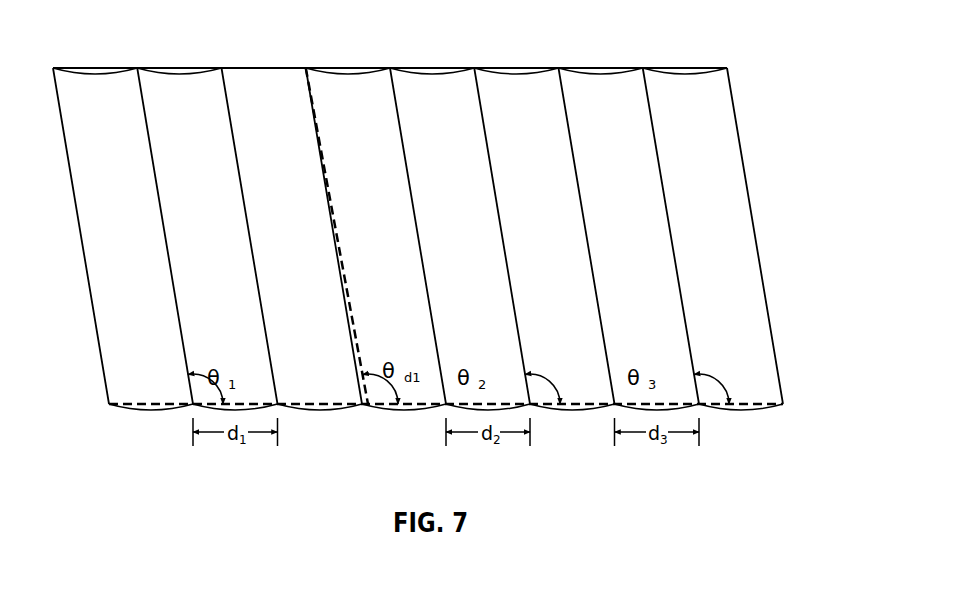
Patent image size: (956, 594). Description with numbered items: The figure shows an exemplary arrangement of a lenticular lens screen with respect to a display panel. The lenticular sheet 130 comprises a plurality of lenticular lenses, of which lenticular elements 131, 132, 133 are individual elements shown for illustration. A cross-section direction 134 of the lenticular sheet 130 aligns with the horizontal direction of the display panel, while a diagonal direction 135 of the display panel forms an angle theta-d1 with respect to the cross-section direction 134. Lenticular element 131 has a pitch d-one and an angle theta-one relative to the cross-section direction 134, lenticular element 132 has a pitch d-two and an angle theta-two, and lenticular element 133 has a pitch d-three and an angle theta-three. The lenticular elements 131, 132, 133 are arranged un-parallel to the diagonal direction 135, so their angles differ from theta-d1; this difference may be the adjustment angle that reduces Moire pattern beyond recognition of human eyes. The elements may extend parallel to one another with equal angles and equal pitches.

The lenticular sheet 130 is at (747, 175).
The lenticular element 131 is at (165, 67).
The lenticular element 132 is at (418, 67).
The lenticular element 133 is at (586, 67).
The cross-section direction 134 is at (725, 403).
The diagonal direction 135 is at (341, 253).